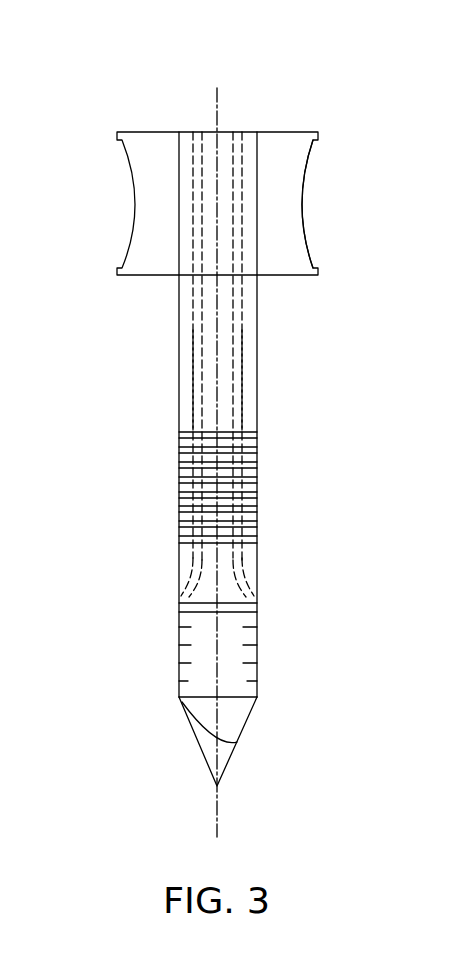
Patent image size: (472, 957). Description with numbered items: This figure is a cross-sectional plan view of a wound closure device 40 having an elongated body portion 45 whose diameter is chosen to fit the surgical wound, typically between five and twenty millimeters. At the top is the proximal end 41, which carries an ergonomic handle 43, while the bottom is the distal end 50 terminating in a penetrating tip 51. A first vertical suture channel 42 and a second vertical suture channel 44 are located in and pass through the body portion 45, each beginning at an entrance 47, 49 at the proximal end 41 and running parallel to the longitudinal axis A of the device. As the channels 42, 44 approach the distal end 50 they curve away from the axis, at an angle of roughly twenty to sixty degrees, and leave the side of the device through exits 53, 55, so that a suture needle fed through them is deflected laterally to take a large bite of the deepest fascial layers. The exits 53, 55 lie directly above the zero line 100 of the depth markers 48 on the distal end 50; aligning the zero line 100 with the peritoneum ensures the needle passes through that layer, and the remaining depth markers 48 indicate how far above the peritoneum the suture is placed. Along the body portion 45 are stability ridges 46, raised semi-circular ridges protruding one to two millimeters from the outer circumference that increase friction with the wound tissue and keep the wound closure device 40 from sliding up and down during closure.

The wound closure device 40 is at (128, 210).
The proximal end 41 is at (297, 105).
The first vertical suture channel 42 is at (196, 378).
The ergonomic handle 43 is at (291, 201).
The second vertical suture channel 44 is at (240, 378).
The elongated body portion 45 is at (179, 432).
The stability ridges 46 is at (257, 481).
The entrance 47 is at (194, 128).
The depth markers 48 is at (158, 641).
The entrance 49 is at (240, 128).
The distal end 50 is at (168, 702).
The penetrating tip 51 is at (228, 763).
The exit 53 is at (179, 593).
The exit 55 is at (257, 593).
The zero line 100 is at (245, 614).
The longitudinal axis A is at (217, 826).